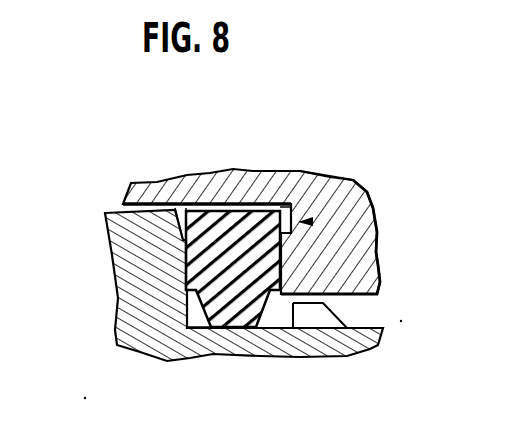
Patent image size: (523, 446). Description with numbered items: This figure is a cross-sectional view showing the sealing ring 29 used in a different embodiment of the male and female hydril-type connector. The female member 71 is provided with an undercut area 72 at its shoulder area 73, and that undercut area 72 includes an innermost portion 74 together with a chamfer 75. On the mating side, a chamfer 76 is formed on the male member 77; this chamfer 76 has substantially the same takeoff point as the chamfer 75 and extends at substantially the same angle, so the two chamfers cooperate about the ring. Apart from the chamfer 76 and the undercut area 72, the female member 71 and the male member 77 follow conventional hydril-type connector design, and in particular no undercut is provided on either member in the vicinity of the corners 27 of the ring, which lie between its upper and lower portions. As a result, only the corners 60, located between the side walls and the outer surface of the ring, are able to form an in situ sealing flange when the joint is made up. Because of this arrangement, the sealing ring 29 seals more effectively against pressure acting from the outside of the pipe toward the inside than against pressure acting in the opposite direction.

The corners 27 is at (187, 292).
The sealing ring 29 is at (217, 230).
The corners 60 is at (185, 204).
The female member 71 is at (340, 197).
The undercut area 72 is at (287, 204).
The shoulder area 73 is at (312, 222).
The innermost portion 74 is at (297, 216).
The chamfer 75 is at (290, 213).
The chamfer 76 is at (172, 203).
The male member 77 is at (132, 267).